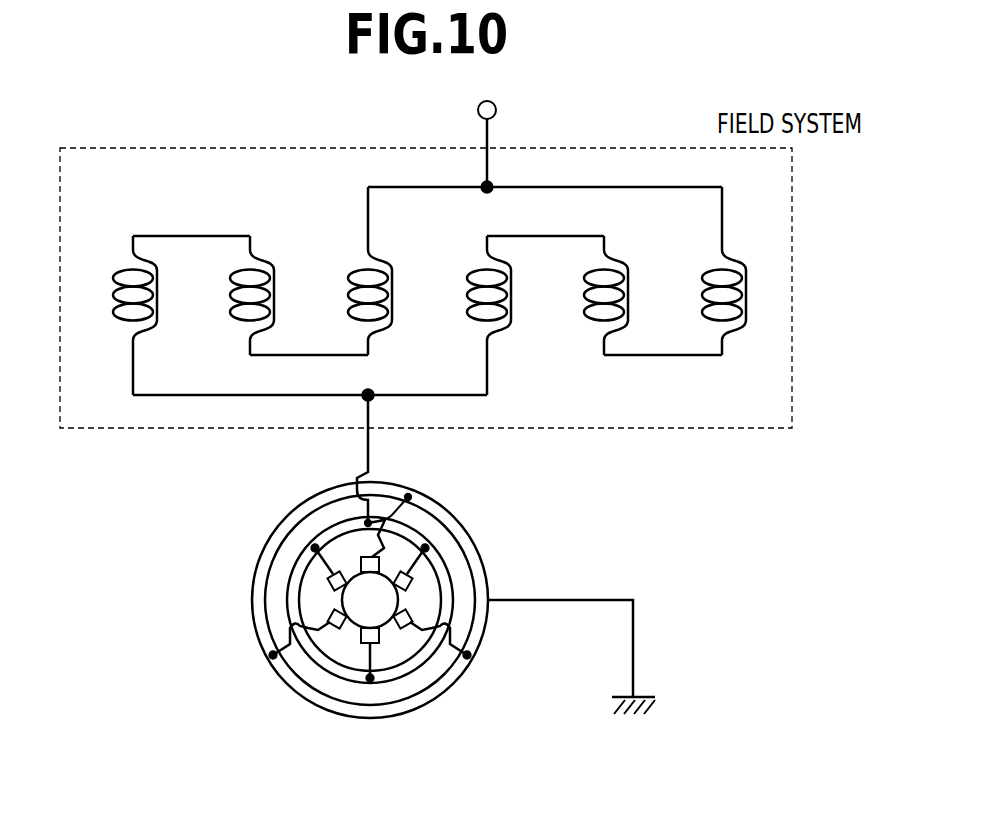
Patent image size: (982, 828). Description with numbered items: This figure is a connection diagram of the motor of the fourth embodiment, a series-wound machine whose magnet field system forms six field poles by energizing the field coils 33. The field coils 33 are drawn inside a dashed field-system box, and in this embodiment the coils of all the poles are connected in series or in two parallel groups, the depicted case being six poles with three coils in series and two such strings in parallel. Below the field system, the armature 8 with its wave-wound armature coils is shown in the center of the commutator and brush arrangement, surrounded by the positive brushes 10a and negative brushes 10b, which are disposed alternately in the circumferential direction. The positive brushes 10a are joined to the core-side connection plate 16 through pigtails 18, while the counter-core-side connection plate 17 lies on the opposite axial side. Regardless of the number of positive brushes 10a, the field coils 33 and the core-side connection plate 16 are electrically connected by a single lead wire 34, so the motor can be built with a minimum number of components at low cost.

The field coils 33 is at (742, 302).
The lead wire 34 is at (365, 445).
The armature 8 is at (377, 587).
The positive brushes 10a is at (330, 590).
The negative brushes 10b is at (405, 614).
The core-side connection plate 16 is at (403, 667).
The counter-core-side connection plate 17 is at (308, 692).
The pigtails 18 is at (323, 570).